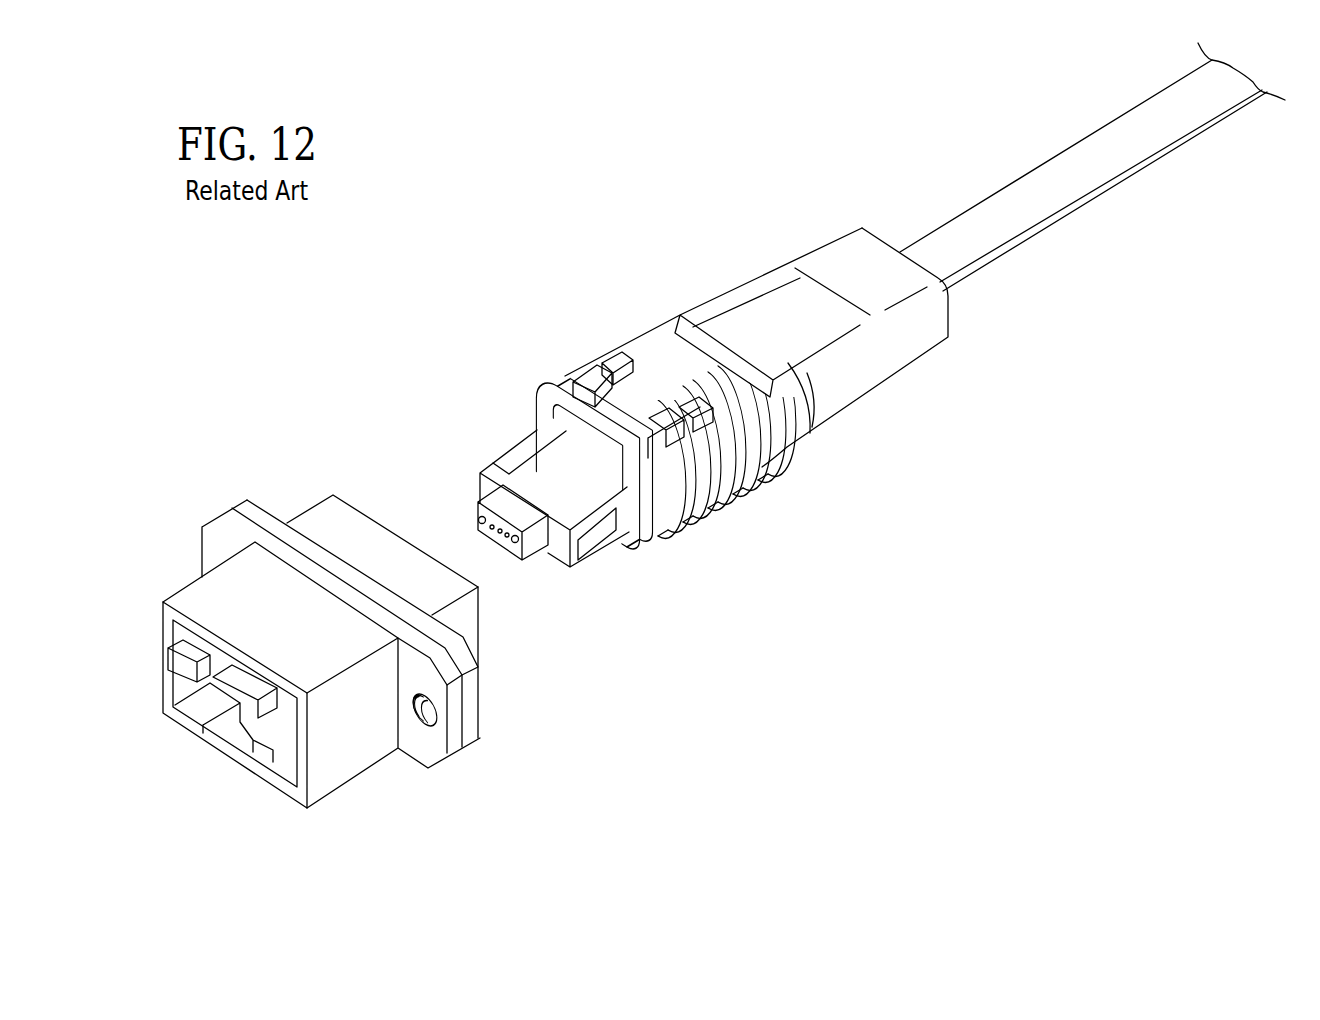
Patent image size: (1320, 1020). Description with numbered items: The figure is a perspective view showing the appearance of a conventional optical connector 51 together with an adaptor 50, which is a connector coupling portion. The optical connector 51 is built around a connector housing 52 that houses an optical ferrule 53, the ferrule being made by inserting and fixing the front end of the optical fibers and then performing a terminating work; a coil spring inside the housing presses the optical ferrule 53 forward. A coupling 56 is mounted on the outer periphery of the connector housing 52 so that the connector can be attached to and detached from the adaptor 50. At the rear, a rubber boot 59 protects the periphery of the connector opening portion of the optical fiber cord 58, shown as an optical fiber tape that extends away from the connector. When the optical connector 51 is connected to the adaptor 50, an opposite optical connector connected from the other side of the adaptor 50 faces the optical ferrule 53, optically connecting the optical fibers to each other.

The adaptor 50 is at (355, 745).
The optical connector 51 is at (668, 188).
The connector housing 52 is at (515, 452).
The optical ferrule 53 is at (537, 542).
The coupling 56 is at (592, 378).
The optical fiber cord 58 is at (1010, 210).
The rubber boot 59 is at (838, 400).